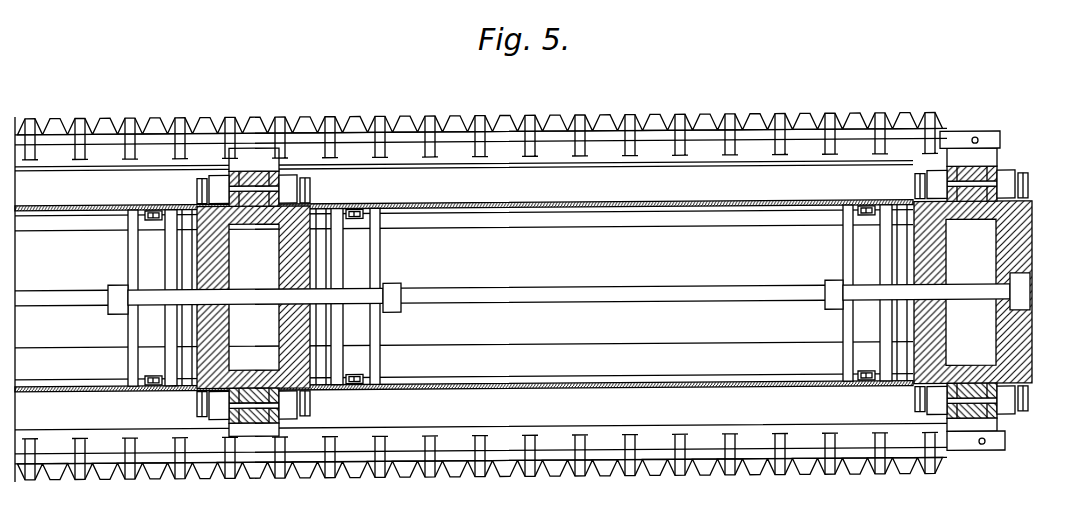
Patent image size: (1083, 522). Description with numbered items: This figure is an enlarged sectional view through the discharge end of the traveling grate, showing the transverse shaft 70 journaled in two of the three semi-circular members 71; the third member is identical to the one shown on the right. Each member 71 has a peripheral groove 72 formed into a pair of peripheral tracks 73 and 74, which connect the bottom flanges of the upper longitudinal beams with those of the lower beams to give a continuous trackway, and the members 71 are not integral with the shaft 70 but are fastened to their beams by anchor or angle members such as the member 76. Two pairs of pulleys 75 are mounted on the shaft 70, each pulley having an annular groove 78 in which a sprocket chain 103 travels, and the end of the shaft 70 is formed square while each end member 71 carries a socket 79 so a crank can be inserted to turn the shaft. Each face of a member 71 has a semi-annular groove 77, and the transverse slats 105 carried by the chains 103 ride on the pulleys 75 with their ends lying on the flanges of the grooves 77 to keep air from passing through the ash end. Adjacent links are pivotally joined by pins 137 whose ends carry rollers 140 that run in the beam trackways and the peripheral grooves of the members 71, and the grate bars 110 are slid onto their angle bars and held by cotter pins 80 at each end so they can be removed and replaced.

The transverse shaft 70 is at (686, 291).
The semi-circular member 71 is at (1034, 254).
The peripheral groove 72 is at (254, 382).
The peripheral track 73 is at (1003, 389).
The peripheral track 74 is at (944, 383).
The pulley 75 is at (847, 331).
The anchor or angle member 76 is at (600, 216).
The semi-annular groove 77 is at (1030, 197).
The annular groove 78 is at (992, 375).
The socket 79 is at (1025, 299).
The cotter pin 80 is at (978, 147).
The sprocket chain 103 is at (865, 222).
The slat 105 is at (640, 393).
The grate bar 110 is at (534, 121).
The pin 137 is at (985, 192).
The roller 140 is at (1005, 200).